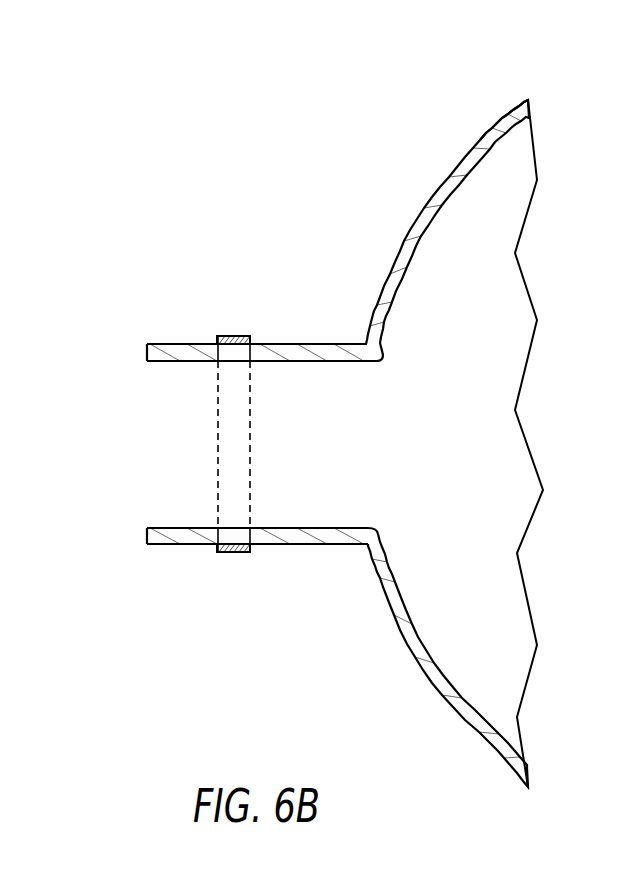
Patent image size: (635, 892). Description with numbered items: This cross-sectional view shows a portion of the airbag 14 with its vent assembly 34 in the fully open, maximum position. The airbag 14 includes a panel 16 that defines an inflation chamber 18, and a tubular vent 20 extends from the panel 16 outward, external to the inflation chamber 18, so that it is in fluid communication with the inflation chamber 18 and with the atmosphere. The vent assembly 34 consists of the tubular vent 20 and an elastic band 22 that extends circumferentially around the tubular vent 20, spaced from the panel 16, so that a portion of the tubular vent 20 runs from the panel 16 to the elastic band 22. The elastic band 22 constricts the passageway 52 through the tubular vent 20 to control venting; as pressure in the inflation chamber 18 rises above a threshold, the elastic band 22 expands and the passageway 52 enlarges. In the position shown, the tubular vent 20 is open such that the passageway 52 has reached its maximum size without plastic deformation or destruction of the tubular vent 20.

The airbag 14 is at (436, 161).
The panel 16 is at (497, 121).
The inflation chamber 18 is at (488, 308).
The tubular vent 20 is at (175, 343).
The elastic band 22 is at (230, 554).
The vent assembly 34 is at (238, 306).
The passageway 52 is at (167, 445).